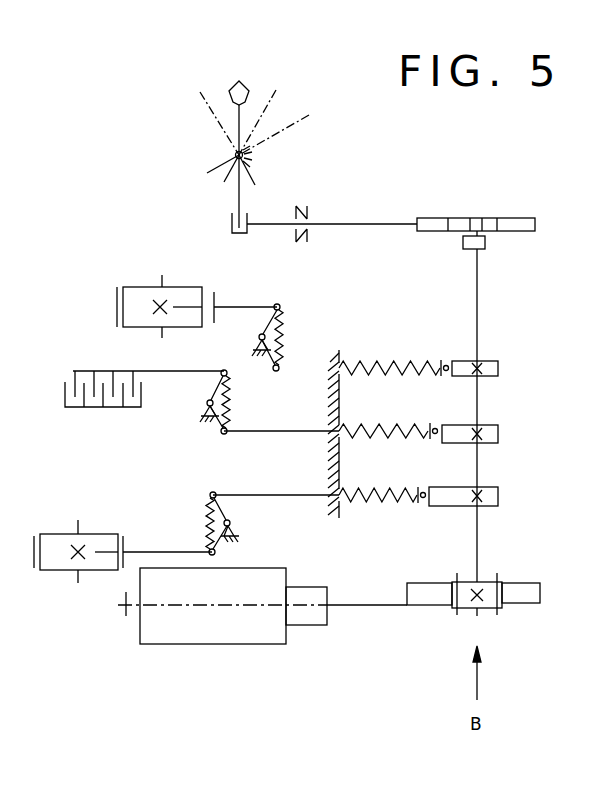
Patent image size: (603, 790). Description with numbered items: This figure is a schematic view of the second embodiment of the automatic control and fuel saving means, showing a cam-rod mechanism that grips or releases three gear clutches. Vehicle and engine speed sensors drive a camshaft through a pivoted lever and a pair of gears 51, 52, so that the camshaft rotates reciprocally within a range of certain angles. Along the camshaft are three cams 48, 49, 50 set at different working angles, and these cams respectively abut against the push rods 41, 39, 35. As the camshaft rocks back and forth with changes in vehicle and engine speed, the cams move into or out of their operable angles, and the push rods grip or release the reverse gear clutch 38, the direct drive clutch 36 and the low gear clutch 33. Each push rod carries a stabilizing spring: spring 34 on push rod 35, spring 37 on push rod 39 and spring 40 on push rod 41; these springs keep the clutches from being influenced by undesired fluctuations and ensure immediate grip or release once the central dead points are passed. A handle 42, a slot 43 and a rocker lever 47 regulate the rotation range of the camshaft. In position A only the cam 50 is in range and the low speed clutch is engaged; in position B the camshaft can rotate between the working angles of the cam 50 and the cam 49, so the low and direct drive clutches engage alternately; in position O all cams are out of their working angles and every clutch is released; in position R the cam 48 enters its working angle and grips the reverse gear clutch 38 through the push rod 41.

The low gear clutch 33 is at (58, 535).
The stabilizing spring 34 is at (207, 516).
The push rod 35 is at (262, 494).
The direct drive clutch 36 is at (77, 372).
The stabilizing spring 37 is at (214, 390).
The reverse gear clutch 38 is at (137, 297).
The push rod 39 is at (295, 430).
The stabilizing spring 40 is at (281, 326).
The push rod 41 is at (383, 358).
The handle 42 is at (237, 132).
The slot 43 is at (514, 228).
The rocker lever 47 is at (486, 246).
The cam 48 is at (499, 368).
The cam 49 is at (496, 436).
The cam 50 is at (496, 497).
The gear 51 is at (489, 582).
The gear 52 is at (540, 594).